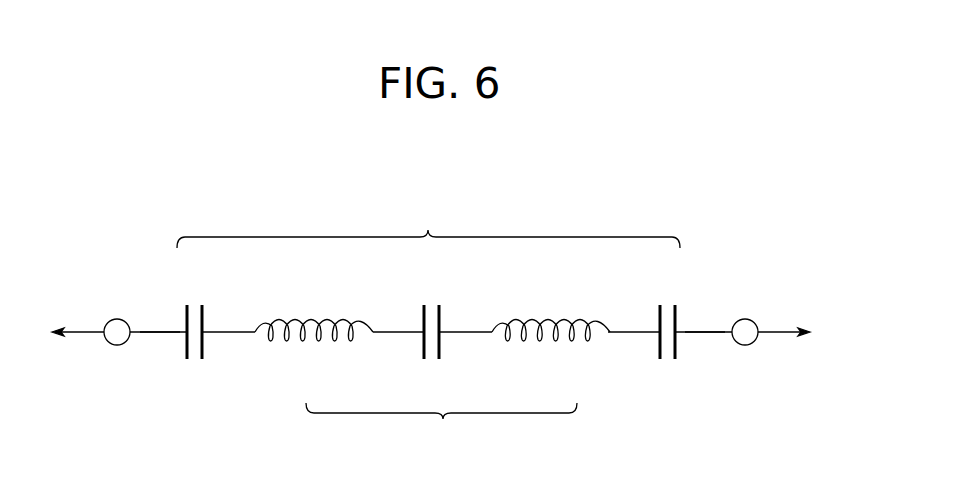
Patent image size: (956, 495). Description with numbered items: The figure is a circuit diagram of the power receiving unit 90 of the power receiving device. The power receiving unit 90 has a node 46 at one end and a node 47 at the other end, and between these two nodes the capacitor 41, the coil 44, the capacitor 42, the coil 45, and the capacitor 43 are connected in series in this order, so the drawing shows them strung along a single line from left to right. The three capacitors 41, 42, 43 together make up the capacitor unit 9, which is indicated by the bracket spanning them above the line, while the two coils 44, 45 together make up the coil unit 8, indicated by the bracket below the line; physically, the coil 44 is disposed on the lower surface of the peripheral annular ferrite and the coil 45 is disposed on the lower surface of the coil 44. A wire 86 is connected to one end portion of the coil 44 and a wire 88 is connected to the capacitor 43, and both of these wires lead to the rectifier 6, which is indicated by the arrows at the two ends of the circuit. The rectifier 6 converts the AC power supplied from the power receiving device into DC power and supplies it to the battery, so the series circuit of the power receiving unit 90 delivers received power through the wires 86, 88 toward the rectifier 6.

The rectifier 6 is at (431, 318).
The coil unit 8 is at (441, 427).
The capacitor unit 9 is at (428, 225).
The capacitor 41 is at (195, 300).
The capacitor 42 is at (431, 300).
The capacitor 43 is at (670, 300).
The coil 44 is at (320, 343).
The coil 45 is at (558, 343).
The node 46 is at (117, 345).
The node 47 is at (745, 345).
The wire 86 is at (155, 334).
The wire 88 is at (707, 334).
The power receiving unit 90 is at (298, 208).